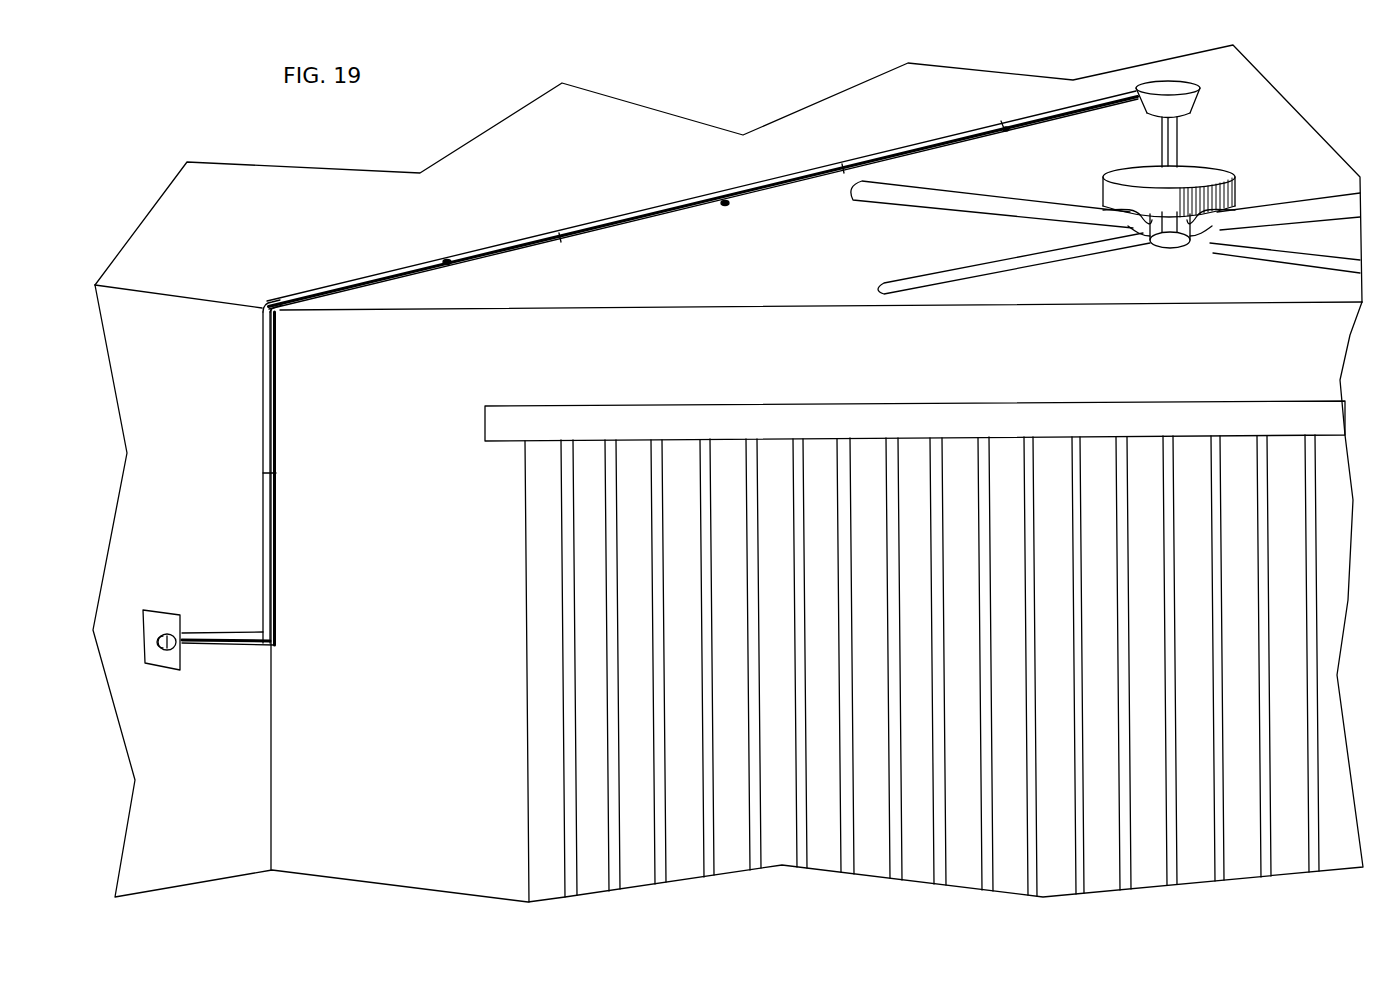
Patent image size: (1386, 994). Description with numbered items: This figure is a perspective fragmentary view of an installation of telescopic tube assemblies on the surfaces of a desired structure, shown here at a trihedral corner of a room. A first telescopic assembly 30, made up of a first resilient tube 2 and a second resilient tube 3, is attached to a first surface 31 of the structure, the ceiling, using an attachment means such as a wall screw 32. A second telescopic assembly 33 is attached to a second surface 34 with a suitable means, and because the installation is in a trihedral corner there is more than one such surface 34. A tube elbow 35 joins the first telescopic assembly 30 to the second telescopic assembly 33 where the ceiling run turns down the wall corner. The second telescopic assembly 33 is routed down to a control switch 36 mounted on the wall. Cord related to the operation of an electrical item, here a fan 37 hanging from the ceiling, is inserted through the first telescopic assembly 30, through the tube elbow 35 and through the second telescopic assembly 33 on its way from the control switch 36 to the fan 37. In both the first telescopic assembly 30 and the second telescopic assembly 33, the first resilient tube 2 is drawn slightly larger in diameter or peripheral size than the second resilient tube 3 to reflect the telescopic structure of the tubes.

The first resilient tube 2 is at (653, 218).
The second resilient tube 3 is at (500, 250).
The first telescopic assembly 30 is at (751, 162).
The first surface 31 is at (832, 256).
The wall screw 32 is at (447, 258).
The second telescopic assembly 33 is at (308, 503).
The second surface 34 is at (187, 440).
The tube elbow 35 is at (262, 305).
The control switch 36 is at (165, 637).
The fan 37 is at (1177, 95).